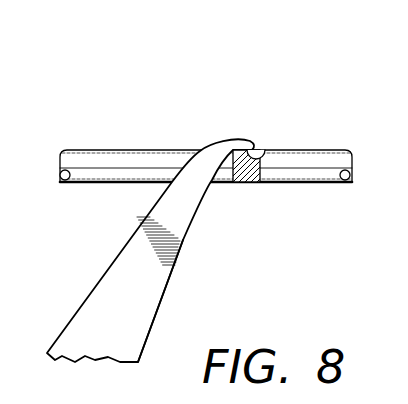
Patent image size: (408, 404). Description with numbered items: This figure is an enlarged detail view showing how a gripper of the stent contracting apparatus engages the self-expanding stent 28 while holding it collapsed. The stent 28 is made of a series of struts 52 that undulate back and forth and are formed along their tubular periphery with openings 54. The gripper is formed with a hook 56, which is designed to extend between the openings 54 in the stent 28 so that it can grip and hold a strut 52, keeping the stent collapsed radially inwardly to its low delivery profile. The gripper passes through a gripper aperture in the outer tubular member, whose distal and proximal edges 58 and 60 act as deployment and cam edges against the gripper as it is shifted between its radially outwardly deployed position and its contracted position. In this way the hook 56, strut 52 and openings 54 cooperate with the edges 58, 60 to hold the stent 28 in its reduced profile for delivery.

The self-expanding stent 28 is at (78, 139).
The strut 52 is at (265, 158).
The opening 54 is at (322, 151).
The hook 56 is at (151, 222).
The distal edge 58 is at (135, 230).
The proximal edge 60 is at (180, 243).